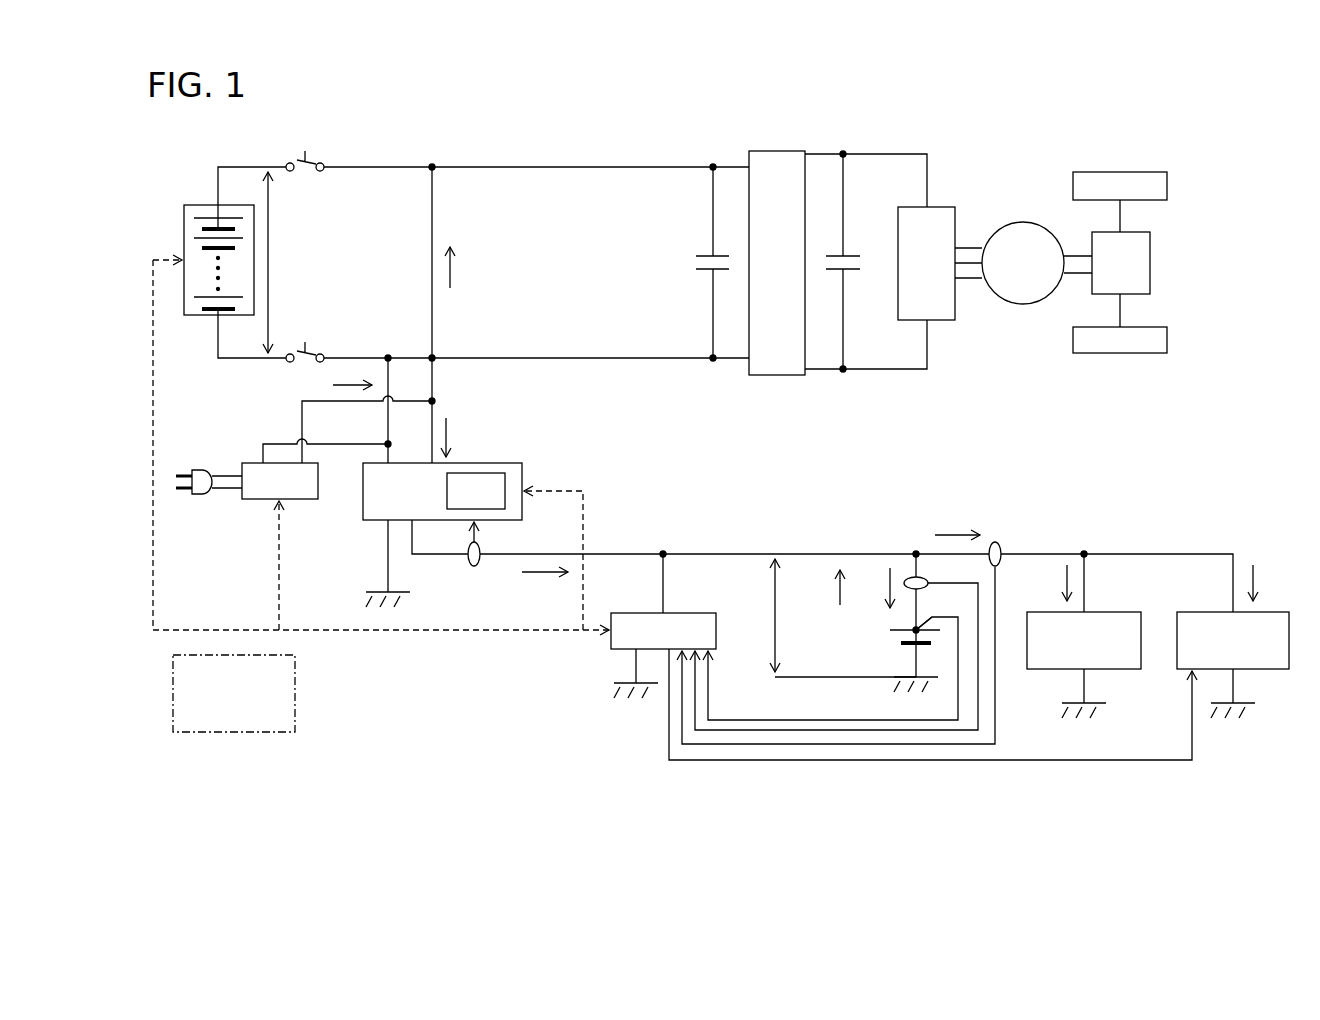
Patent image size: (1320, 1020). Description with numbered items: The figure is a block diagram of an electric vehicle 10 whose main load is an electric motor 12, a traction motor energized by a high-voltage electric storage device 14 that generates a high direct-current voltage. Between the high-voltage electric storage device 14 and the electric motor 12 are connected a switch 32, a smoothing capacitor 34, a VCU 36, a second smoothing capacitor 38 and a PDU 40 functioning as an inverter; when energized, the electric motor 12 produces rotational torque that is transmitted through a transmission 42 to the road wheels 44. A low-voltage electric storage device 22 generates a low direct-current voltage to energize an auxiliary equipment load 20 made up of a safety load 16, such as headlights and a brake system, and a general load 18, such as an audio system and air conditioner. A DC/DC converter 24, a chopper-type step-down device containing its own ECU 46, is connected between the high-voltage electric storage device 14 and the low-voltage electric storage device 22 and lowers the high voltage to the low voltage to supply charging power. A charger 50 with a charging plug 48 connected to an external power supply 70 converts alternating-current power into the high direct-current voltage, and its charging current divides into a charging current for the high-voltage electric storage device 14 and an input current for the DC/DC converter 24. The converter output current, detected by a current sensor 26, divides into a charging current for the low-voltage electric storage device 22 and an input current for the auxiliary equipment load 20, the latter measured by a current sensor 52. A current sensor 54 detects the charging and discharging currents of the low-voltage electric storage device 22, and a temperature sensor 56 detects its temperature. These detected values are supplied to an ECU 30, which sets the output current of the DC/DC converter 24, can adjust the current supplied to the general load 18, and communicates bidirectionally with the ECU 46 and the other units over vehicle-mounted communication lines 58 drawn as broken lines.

The electric vehicle 10 is at (497, 125).
The electric motor 12 is at (1008, 222).
The high-voltage electric storage device 14 is at (184, 222).
The safety load 16 is at (1120, 612).
The general load 18 is at (1177, 630).
The auxiliary equipment load 20 is at (1176, 560).
The low-voltage electric storage device 22 is at (890, 631).
The DC/DC converter 24 is at (522, 506).
The current sensor 26 is at (474, 566).
The ECU 30 is at (650, 613).
The switch 32 is at (311, 158).
The smoothing capacitor 34 is at (696, 261).
The VCU 36 is at (771, 151).
The smoothing capacitor 38 is at (856, 266).
The PDU 40 is at (942, 207).
The transmission 42 is at (1150, 266).
The road wheels 44 is at (1125, 172).
The ECU 46 is at (507, 479).
The charging plug 48 is at (195, 496).
The charger 50 is at (257, 499).
The current sensor 52 is at (1001, 547).
The current sensor 54 is at (926, 579).
The temperature sensor 56 is at (920, 627).
The vehicle-mounted communication lines 58 is at (412, 632).
The external power supply 70 is at (208, 735).